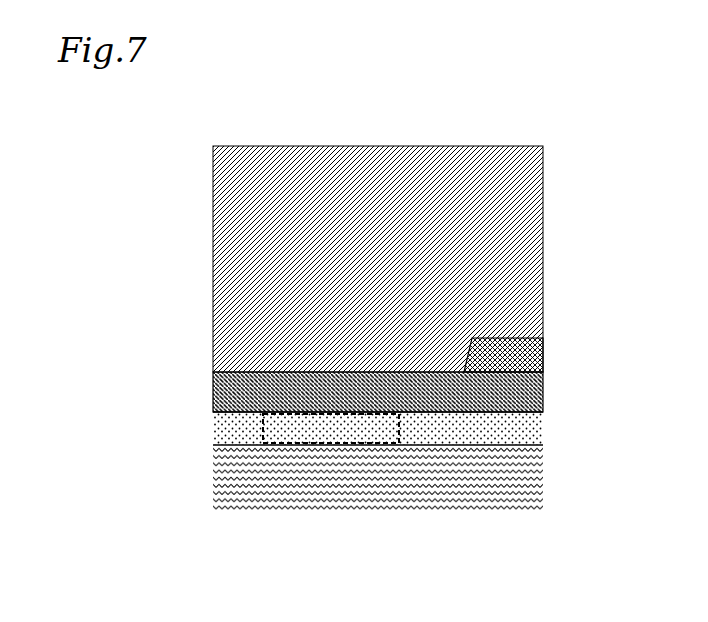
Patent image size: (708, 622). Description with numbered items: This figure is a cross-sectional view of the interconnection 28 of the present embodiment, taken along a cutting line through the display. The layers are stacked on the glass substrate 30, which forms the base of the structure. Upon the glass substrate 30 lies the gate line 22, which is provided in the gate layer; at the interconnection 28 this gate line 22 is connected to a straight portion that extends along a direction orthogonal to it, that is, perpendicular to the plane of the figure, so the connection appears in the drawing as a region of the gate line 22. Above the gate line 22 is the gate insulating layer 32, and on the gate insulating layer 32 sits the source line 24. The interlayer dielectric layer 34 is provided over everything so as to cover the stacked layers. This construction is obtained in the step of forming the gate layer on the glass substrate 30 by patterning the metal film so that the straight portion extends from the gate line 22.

The interlayer dielectric layer 34 is at (543, 263).
The source line 24 is at (543, 347).
The gate insulating layer 32 is at (543, 387).
The gate line 22 is at (543, 424).
The glass substrate 30 is at (543, 474).
The interconnection 28 is at (315, 437).